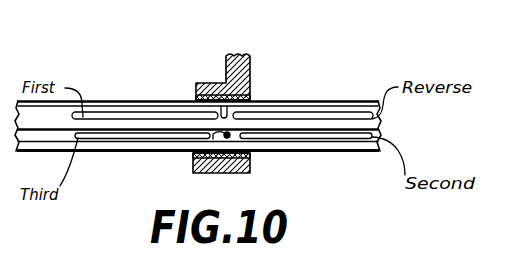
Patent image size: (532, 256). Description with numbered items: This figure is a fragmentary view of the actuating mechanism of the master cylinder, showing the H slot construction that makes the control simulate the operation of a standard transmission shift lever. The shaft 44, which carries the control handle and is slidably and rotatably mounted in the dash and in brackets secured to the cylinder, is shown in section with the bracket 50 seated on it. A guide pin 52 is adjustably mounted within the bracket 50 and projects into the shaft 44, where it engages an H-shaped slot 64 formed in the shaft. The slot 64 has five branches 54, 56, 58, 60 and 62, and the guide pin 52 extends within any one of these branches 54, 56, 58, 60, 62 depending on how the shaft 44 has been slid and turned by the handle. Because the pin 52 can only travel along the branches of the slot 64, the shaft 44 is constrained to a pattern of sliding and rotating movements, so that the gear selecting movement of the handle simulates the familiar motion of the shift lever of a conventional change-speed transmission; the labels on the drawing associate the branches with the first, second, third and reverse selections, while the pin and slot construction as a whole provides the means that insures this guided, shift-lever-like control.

The shaft 44 is at (58, 140).
The bracket 50 is at (250, 68).
The guide pin 52 is at (232, 136).
The branch of H-shaped slot 54 is at (320, 122).
The branch of H-shaped slot 56 is at (337, 141).
The branch of H-shaped slot 58 is at (150, 137).
The branch of H-shaped slot 60 is at (115, 120).
The branch of H-shaped slot 62 is at (208, 152).
The H-shaped slot 64 is at (297, 112).